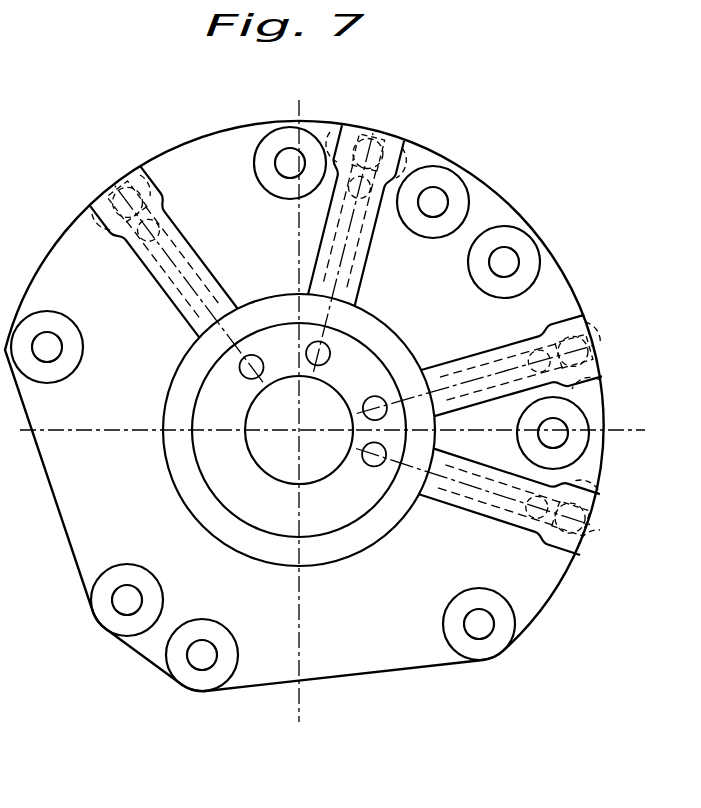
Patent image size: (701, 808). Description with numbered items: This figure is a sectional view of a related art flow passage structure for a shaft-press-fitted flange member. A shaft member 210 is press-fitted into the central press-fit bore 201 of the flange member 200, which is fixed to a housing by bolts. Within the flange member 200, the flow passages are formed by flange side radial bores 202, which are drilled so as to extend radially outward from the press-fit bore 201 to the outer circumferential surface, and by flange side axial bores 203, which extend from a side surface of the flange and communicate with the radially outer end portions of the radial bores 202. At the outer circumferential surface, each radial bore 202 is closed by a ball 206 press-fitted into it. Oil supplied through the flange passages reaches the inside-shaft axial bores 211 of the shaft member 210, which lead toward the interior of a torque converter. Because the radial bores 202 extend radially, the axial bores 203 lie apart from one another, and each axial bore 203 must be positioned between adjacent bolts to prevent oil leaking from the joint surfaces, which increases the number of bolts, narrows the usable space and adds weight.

The flange member 200 is at (496, 200).
The press-fit bore 201 is at (370, 356).
The flange side radial bores 202 is at (205, 275).
The flange side axial bores 203 is at (172, 180).
The balls 206 is at (122, 196).
The shaft member 210 is at (299, 450).
The inside-shaft axial bores 211 is at (257, 372).